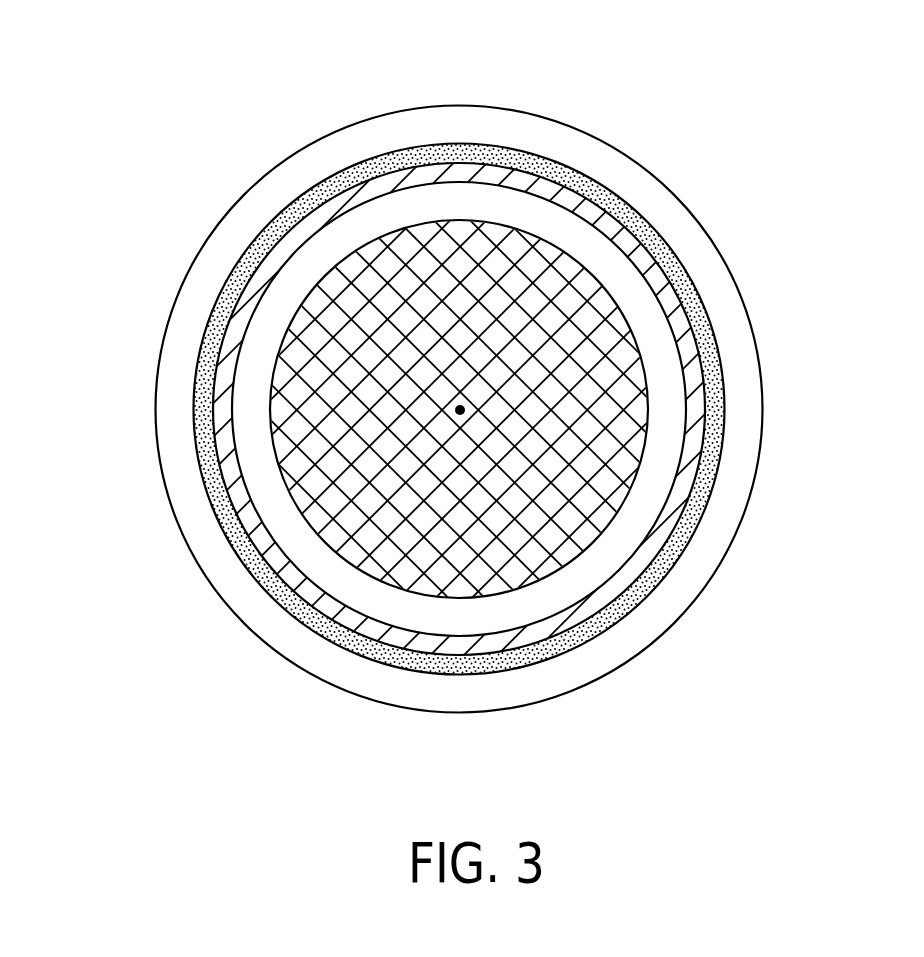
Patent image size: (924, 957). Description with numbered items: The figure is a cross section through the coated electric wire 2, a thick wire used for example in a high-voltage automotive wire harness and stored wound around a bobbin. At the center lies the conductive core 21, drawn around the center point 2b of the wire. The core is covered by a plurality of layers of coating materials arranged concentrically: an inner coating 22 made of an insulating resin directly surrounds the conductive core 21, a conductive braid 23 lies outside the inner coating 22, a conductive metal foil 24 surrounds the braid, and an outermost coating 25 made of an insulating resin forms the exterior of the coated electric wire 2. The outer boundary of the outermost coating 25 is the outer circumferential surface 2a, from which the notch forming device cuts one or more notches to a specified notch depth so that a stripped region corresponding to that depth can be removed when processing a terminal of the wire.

The coated electric wire 2 is at (473, 72).
The outer circumferential surface 2a is at (230, 213).
The central axis of cable 2b is at (460, 410).
The conductive core 21 is at (578, 323).
The inner coating 22 is at (657, 338).
The conductive braid 23 is at (692, 387).
The conductive metal foil 24 is at (718, 426).
The outermost coating 25 is at (500, 409).